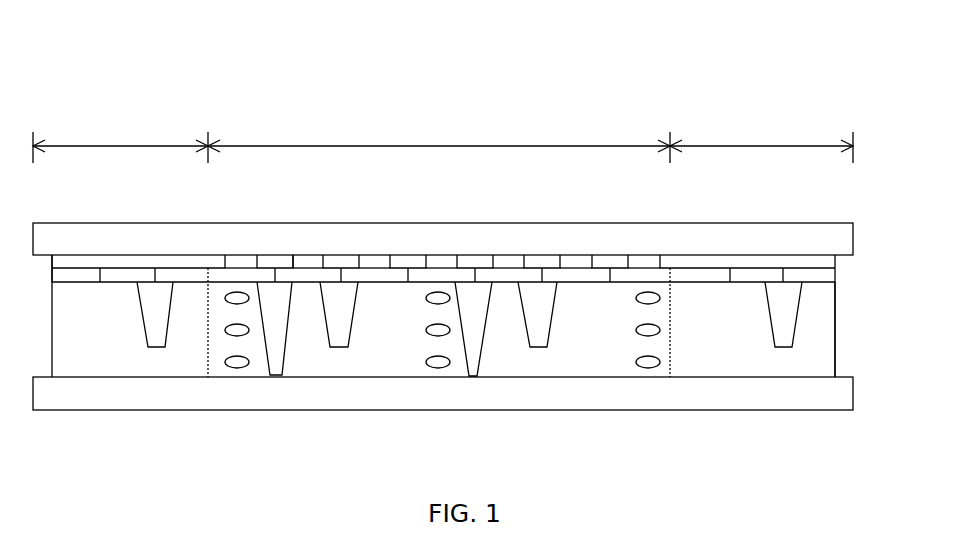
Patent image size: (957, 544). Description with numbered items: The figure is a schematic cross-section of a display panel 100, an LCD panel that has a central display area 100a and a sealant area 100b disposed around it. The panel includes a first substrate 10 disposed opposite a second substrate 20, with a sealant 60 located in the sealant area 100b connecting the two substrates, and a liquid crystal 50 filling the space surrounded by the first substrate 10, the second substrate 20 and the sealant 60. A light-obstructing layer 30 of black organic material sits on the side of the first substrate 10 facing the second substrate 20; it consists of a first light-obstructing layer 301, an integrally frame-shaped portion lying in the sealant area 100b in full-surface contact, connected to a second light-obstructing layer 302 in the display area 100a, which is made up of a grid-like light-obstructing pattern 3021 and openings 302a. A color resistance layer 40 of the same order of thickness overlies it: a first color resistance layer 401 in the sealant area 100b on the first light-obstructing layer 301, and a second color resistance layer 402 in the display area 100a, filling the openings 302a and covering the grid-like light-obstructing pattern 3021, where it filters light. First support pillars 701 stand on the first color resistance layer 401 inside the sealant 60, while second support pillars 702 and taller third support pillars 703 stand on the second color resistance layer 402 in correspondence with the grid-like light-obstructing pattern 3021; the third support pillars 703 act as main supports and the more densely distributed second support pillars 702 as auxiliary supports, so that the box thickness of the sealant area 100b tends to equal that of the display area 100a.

The display panel 100 is at (432, 82).
The display area 100a is at (439, 139).
The sealant area 100b is at (443, 139).
The first substrate 10 is at (835, 242).
The second substrate 20 is at (835, 398).
The light-obstructing layer 30 is at (475, 218).
The first light-obstructing layer 301 is at (118, 264).
The second light-obstructing layer 302 is at (305, 215).
The grid-like light-obstructing pattern 3021 is at (278, 264).
The openings 302a is at (302, 268).
The color resistance layer 40 is at (475, 251).
The first color resistance layer 401 is at (64, 276).
The second color resistance layer 402 is at (512, 276).
The liquid crystal 50 is at (236, 364).
The sealant 60 is at (738, 358).
The first support pillars 701 is at (159, 318).
The second support pillars 702 is at (540, 318).
The third support pillars 703 is at (478, 318).